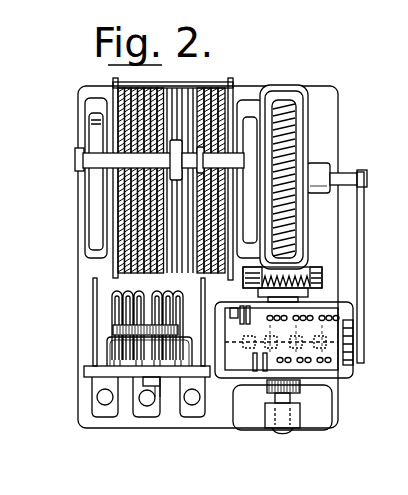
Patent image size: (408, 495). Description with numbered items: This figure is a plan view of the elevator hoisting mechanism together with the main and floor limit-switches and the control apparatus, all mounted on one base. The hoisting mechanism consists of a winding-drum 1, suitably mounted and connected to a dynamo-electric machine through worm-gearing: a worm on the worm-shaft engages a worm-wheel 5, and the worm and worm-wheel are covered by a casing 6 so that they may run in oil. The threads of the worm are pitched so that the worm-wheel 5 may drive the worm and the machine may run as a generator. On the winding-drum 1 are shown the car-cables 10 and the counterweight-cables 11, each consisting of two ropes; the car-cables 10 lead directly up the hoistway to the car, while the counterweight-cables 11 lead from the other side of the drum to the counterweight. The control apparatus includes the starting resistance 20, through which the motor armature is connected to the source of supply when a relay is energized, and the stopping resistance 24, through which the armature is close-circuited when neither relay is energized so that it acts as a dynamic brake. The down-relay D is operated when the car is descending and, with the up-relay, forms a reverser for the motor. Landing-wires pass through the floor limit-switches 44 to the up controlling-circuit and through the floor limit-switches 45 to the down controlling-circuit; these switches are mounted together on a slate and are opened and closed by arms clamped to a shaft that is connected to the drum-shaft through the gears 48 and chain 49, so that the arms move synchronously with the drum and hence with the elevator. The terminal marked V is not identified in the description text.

The winding-drum 1 is at (230, 82).
The worm-wheel 5 is at (293, 138).
The casing 6 is at (310, 88).
The car-cables 10 is at (163, 82).
The counterweight-cables 11 is at (192, 82).
The starting resistance 20 is at (112, 303).
The stopping resistance 24 is at (113, 338).
The floor limit-switches 44 is at (320, 317).
The floor limit-switches 45 is at (325, 377).
The gears 48 is at (353, 367).
The chain 49 is at (363, 252).
The down-relay D is at (97, 398).
The terminal V is at (200, 402).